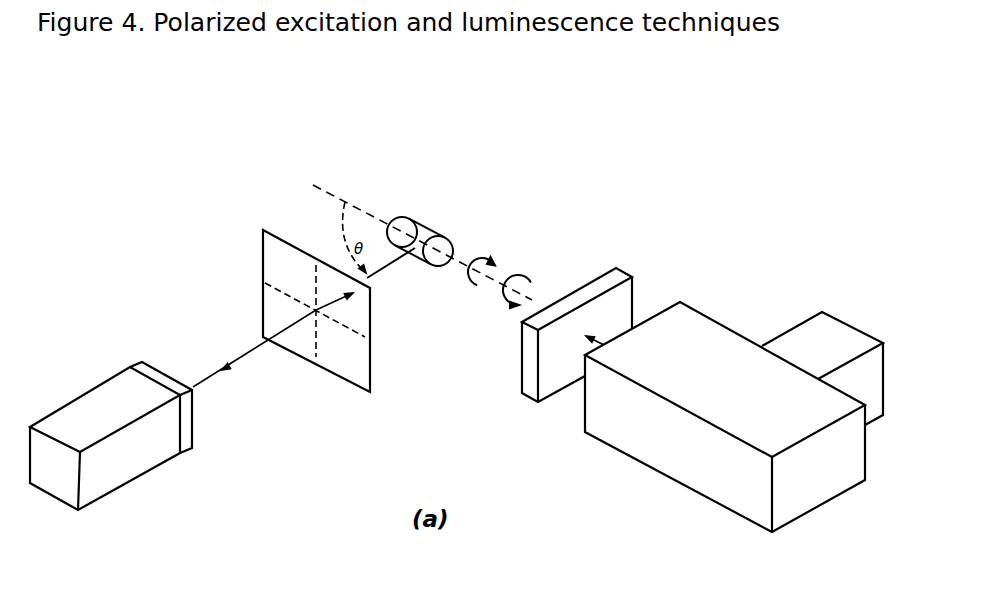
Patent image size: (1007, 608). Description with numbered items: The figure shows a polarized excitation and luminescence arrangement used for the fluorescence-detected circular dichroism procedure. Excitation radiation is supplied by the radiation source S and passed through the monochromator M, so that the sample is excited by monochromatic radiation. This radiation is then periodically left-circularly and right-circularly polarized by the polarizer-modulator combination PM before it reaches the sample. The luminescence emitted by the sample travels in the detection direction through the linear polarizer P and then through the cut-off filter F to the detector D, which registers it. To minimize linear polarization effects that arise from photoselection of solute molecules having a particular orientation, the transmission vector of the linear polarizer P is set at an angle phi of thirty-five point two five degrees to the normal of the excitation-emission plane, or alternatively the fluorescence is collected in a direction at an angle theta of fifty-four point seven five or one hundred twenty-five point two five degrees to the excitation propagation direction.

The detector D is at (105, 438).
The cut-off filter F is at (160, 396).
The linear polarizer P is at (306, 311).
The polarizer-modulator combination PM is at (591, 327).
The monochromator M is at (725, 417).
The radiation source S is at (822, 368).